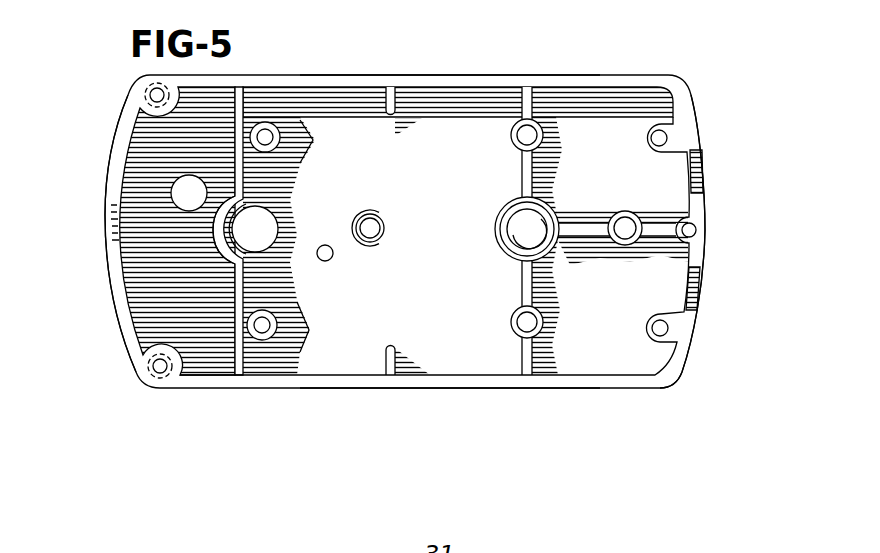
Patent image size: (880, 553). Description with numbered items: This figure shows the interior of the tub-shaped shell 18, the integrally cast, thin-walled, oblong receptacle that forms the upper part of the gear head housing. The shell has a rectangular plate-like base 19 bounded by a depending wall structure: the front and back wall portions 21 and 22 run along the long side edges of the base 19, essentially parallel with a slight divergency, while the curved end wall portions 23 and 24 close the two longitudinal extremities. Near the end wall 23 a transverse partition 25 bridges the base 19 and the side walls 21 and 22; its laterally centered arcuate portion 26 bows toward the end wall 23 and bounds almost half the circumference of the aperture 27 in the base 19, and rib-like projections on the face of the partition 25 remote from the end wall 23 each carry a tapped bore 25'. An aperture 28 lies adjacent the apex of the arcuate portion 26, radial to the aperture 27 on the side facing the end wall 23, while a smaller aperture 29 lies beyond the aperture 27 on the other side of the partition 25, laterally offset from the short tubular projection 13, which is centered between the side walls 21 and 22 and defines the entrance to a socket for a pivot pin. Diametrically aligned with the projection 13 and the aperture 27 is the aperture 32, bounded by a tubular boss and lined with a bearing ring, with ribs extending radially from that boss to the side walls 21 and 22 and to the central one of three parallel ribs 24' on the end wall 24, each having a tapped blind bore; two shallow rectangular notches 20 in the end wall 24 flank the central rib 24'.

The tubular projection 13 is at (380, 222).
The tub-shaped shell 18 is at (323, 66).
The base 19 is at (460, 290).
The rectangular notches 20 is at (704, 168).
The front wall portion 21 is at (455, 75).
The back wall portion 22 is at (436, 390).
The end wall portion 23 is at (107, 192).
The end wall portion 24 is at (697, 372).
The radial rib-like projections 24' is at (628, 337).
The partition 25 is at (213, 231).
The tapped bore 25' is at (326, 236).
The arcuate partition portion 26 is at (216, 236).
The aperture 27 is at (276, 216).
The aperture 28 is at (200, 176).
The aperture 29 is at (334, 257).
The aperture 32 is at (510, 232).